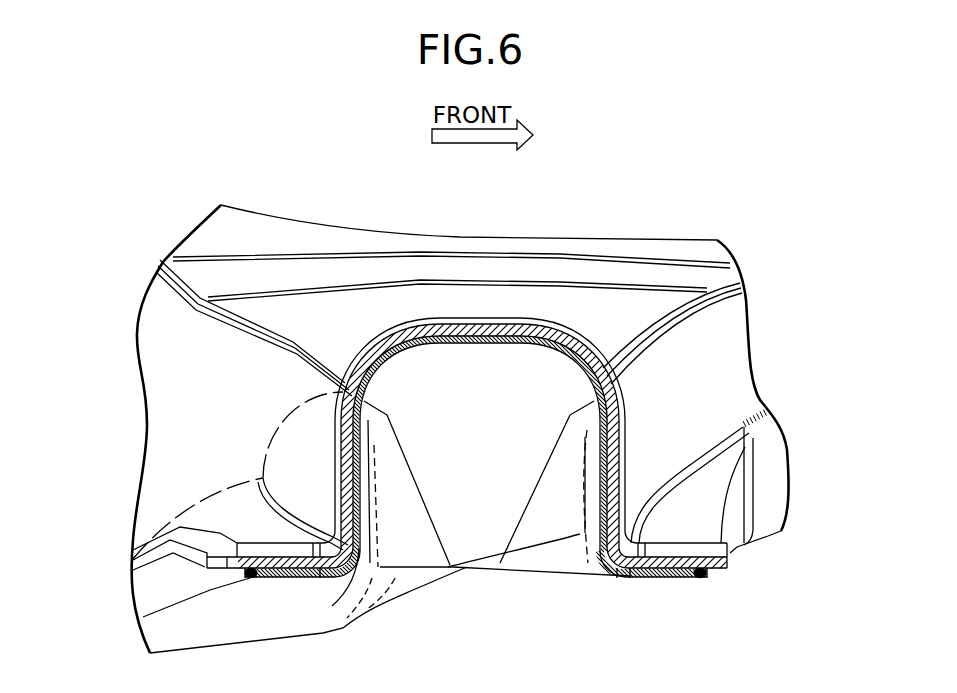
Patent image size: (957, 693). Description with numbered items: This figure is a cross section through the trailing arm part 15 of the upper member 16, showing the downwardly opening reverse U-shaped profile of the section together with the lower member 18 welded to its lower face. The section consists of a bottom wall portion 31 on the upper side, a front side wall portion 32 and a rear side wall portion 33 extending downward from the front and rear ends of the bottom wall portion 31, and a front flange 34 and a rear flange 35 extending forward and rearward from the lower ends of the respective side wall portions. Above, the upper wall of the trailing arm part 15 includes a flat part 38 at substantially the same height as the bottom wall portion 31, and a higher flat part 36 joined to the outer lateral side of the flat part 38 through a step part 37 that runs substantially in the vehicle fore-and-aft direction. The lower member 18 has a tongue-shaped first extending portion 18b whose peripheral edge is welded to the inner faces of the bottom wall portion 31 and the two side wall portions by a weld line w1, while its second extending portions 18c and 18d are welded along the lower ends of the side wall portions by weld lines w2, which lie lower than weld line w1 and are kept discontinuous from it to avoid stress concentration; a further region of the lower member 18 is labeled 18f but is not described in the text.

The trailing arm part 15 is at (370, 220).
The upper member 16 is at (659, 234).
The lower member 18 is at (766, 534).
The first extending portion 18b is at (467, 348).
The second extending portion 18c is at (663, 578).
The second extending portion 18d is at (272, 578).
The inner wall of wheel house 18f is at (490, 476).
The bottom wall portion 31 is at (446, 321).
The front side wall portion 32 is at (621, 447).
The rear side wall portion 33 is at (183, 338).
The front flange 34 is at (672, 560).
The rear flange 35 is at (287, 560).
The higher flat part 36 is at (311, 230).
The step part 37 is at (440, 268).
The flat part 38 is at (548, 297).
The weld line w1 is at (360, 484).
The weld line w2 is at (250, 574).